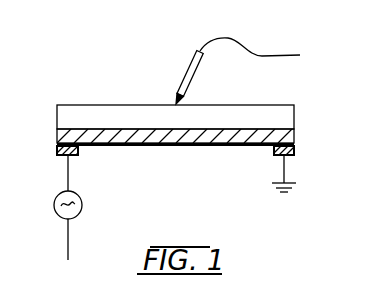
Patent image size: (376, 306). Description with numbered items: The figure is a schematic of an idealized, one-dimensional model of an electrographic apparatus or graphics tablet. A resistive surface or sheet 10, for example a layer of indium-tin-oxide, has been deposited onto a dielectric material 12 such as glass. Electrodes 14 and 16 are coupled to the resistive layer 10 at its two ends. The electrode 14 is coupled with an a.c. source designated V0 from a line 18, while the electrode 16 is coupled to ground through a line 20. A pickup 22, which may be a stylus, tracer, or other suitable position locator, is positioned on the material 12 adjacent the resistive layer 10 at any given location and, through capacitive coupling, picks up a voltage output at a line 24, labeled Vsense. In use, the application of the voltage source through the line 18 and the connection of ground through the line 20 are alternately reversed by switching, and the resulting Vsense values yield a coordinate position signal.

The resistive surface 10 is at (203, 146).
The dielectric material 12 is at (222, 118).
The electrode 14 is at (57, 150).
The electrode 16 is at (296, 148).
The line 18 is at (69, 172).
The line 20 is at (286, 170).
The pickup 22 is at (189, 69).
The line 24 is at (244, 52).